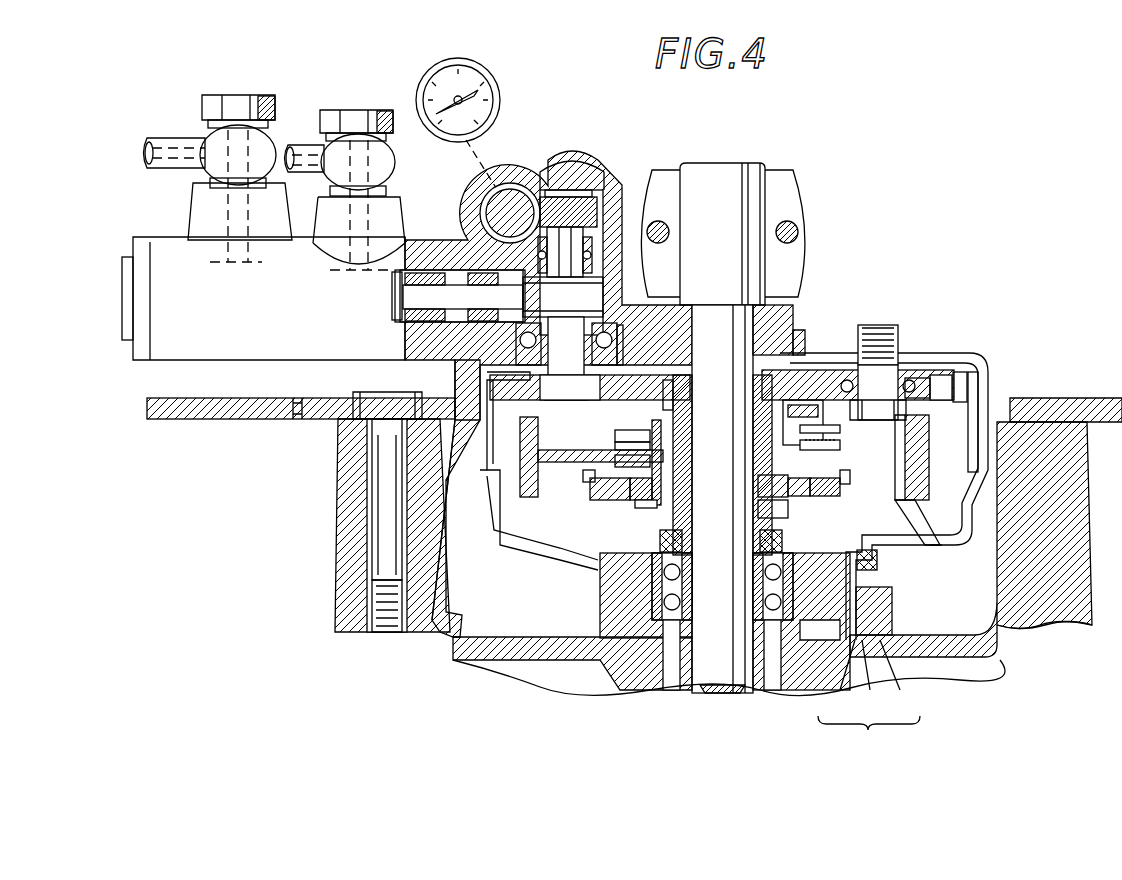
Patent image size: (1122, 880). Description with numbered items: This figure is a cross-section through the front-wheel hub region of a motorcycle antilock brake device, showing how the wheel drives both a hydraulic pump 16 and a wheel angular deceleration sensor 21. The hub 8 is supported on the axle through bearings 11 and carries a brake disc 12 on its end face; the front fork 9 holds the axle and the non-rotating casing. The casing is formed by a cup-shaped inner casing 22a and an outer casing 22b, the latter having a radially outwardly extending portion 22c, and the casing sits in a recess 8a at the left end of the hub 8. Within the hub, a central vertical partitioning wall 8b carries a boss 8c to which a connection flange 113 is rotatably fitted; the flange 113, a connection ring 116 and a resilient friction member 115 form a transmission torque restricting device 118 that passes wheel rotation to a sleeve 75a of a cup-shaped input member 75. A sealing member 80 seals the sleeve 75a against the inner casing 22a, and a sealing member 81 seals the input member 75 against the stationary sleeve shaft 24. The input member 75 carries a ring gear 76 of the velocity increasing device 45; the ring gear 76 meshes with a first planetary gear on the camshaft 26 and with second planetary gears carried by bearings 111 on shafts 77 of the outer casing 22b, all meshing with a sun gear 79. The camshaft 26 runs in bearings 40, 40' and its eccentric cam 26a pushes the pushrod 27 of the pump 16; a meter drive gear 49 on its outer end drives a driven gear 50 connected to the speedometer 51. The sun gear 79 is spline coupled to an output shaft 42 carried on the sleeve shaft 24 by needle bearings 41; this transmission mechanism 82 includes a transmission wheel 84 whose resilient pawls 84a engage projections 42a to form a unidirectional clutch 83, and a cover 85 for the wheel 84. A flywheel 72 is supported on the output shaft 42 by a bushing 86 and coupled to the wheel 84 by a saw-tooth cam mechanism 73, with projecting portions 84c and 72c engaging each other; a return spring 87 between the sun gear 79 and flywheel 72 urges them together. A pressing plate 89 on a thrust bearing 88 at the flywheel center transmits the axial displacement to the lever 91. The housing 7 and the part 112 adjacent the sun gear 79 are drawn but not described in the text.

The pump housing 7 is at (440, 220).
The hub 8 is at (352, 483).
The recess 8a is at (450, 637).
The central vertical partitioning wall 8b is at (518, 650).
The boss 8c is at (800, 615).
The front fork 9 is at (788, 190).
The bearing 11 is at (672, 610).
The brake disc 12 is at (217, 410).
The hydraulic pump 16 is at (390, 291).
The wheel angular deceleration sensor 21 is at (942, 542).
The inner casing 22a is at (945, 540).
The outer casing 22b is at (975, 352).
The radially outwardly extending portion 22c is at (298, 302).
The sleeve shaft 24 is at (770, 515).
The camshaft 26 is at (578, 355).
The eccentric cam 26a is at (580, 307).
The pushrod 27 is at (410, 292).
The bearing 40 is at (602, 255).
The bearing 40' is at (635, 333).
The needle bearing 41 is at (665, 460).
The output shaft 42 is at (752, 407).
The engaging projection 42a is at (780, 497).
The velocity increasing device 45 is at (962, 372).
The meter drive gear 49 is at (597, 212).
The driven gear 50 is at (490, 206).
The speedometer 51 is at (480, 99).
The flywheel 72 is at (905, 460).
The projecting portion 72c is at (850, 477).
The cam mechanism 73 is at (836, 458).
The input member 75 is at (925, 520).
The sleeve 75a is at (880, 590).
The ring gear 76 is at (965, 386).
The shaft 77 is at (880, 385).
The sun gear 79 is at (678, 385).
The sealing member 80 is at (878, 560).
The sealing member 81 is at (790, 512).
The transmission mechanism 82 is at (845, 498).
The unidirectional clutch 83 is at (808, 494).
The transmission wheel 84 is at (610, 500).
The resilient pawl 84a is at (648, 503).
The projecting portion 84c is at (583, 477).
The cover 85 is at (600, 492).
The bushing 86 is at (662, 470).
The return spring 87 is at (648, 440).
The thrust bearing 88 is at (618, 448).
The pressing plate 89 is at (620, 440).
The lever 91 is at (818, 418).
The bearing 111 is at (922, 378).
The ring 112 is at (672, 395).
The connection flange 113 is at (837, 676).
The resilient friction member 115 is at (876, 676).
The connection ring 116 is at (901, 676).
The transmission torque restricting device 118 is at (869, 737).